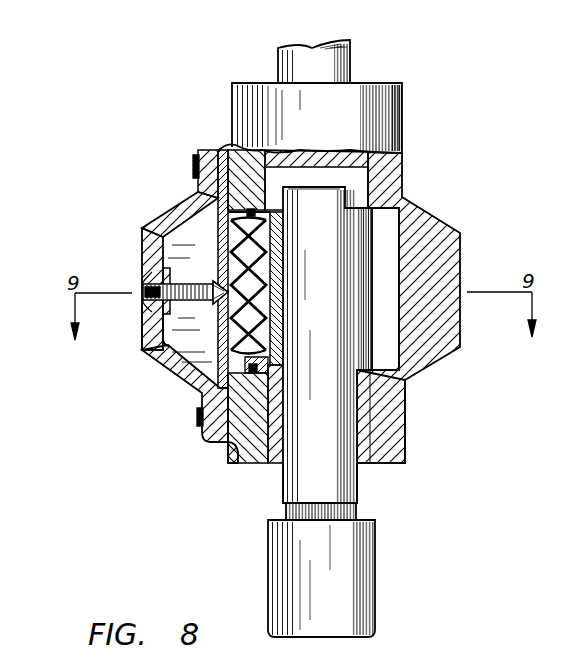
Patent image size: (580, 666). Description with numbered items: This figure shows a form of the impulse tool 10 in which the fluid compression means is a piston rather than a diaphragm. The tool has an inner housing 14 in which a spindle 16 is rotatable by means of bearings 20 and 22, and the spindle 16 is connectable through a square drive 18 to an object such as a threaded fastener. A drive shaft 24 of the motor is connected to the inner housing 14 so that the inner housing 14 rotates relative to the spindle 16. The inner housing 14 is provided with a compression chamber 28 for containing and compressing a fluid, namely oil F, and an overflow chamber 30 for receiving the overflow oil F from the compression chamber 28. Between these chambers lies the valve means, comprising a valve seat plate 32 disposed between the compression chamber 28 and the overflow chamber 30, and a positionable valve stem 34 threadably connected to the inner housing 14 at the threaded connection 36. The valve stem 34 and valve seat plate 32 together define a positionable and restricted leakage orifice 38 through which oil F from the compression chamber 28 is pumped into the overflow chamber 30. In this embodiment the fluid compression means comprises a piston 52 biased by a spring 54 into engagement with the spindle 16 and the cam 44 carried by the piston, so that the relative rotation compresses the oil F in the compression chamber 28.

The impulse tool 10 is at (68, 118).
The inner housing 14 is at (432, 232).
The spindle 16 is at (340, 451).
The square drive 18 is at (345, 603).
The bearing 20 is at (362, 426).
The bearing 22 is at (321, 178).
The drive shaft 24 is at (312, 62).
The compression chamber 28 is at (237, 207).
The overflow chamber 30 is at (186, 232).
The valve seat plate 32 is at (228, 342).
The valve stem 34 is at (150, 284).
The threaded connection 36 is at (147, 318).
The leakage orifice 38 is at (219, 281).
The cam 44 is at (365, 292).
The piston 52 is at (276, 342).
The spring 54 is at (256, 308).
The oil F is at (145, 354).